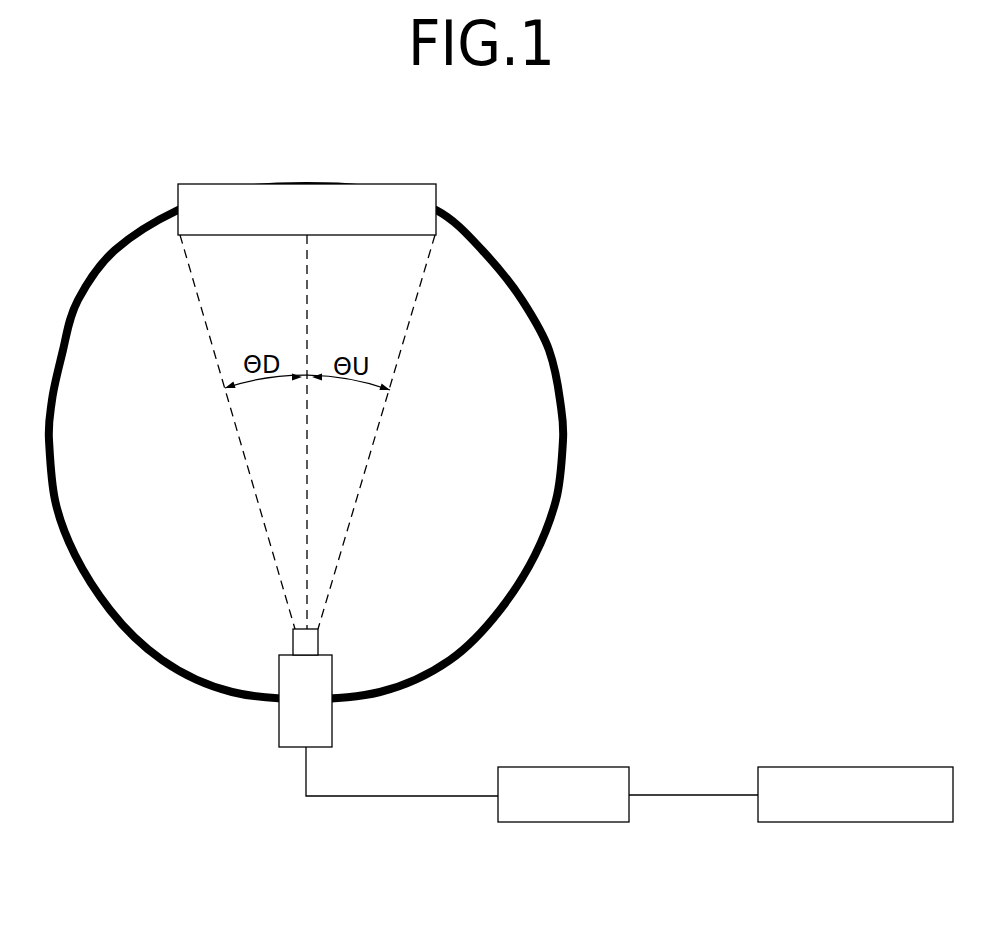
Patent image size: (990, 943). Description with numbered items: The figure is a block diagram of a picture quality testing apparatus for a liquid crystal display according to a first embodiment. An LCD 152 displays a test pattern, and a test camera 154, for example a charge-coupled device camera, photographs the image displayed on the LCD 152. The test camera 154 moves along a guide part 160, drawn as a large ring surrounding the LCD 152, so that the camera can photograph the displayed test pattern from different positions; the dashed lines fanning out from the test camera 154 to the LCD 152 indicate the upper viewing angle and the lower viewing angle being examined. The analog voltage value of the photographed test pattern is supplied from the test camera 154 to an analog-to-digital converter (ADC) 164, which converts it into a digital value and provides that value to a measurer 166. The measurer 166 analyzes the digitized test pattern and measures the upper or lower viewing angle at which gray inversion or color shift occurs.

The LCD 152 is at (437, 192).
The test camera 154 is at (279, 732).
The guide part 160 is at (566, 434).
The analog-to-digital converter (ADC) 164 is at (562, 822).
The measurer 166 is at (822, 822).